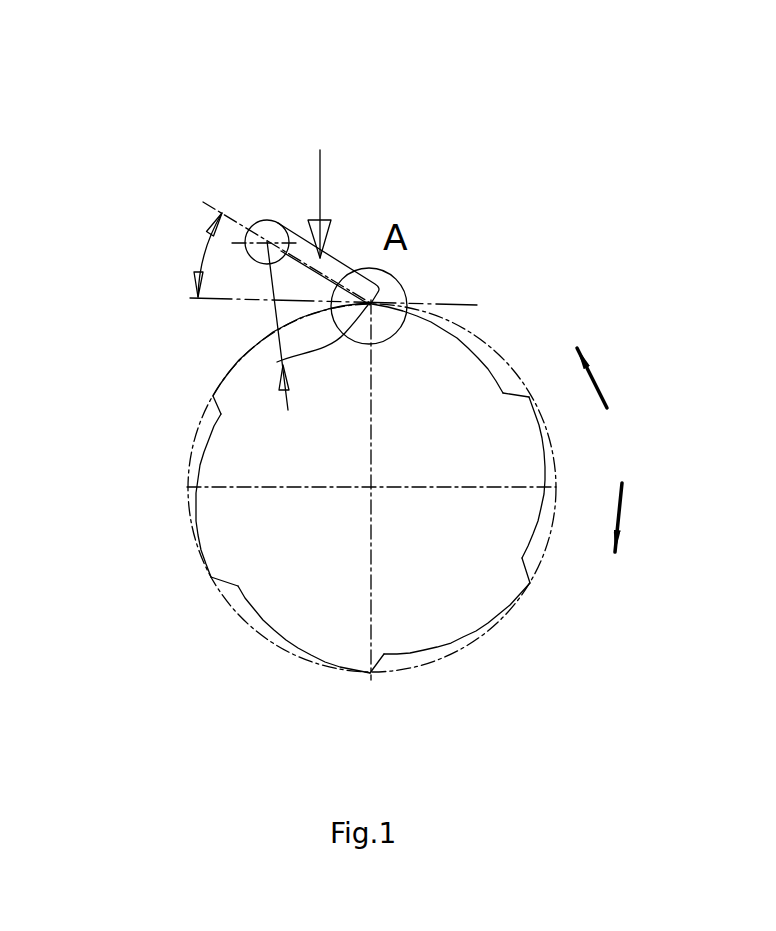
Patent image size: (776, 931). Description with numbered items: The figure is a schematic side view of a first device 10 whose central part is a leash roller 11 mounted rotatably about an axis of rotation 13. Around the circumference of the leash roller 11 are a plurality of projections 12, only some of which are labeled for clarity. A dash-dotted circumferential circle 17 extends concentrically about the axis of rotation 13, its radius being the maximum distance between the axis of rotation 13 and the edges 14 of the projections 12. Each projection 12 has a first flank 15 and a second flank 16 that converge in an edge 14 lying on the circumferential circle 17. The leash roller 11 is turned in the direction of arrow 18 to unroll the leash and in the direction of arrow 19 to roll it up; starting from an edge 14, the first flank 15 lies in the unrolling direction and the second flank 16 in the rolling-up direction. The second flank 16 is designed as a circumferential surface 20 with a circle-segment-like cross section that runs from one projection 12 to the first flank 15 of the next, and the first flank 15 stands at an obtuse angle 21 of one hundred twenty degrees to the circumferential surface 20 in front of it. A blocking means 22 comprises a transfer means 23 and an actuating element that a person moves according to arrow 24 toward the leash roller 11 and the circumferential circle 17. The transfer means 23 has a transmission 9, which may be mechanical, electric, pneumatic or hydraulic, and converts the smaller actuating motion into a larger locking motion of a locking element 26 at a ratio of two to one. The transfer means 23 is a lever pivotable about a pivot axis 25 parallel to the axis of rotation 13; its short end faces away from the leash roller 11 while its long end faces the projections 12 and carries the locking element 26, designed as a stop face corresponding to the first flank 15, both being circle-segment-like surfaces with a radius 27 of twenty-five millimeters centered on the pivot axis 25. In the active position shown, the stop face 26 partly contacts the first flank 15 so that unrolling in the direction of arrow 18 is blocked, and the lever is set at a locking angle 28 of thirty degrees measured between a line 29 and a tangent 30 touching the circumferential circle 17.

The transmission 9 is at (257, 213).
The device 10 is at (530, 145).
The leash roller 11 is at (470, 522).
The projections 12 is at (355, 680).
The axis of rotation 13 is at (374, 490).
The edge 14 is at (530, 582).
The first flank 15 is at (522, 392).
The second flank 16 is at (550, 447).
The circumferential circle 17 is at (187, 507).
The arrow 18 is at (605, 383).
The arrow 19 is at (623, 508).
The circumferential surface 20 is at (203, 463).
The obtuse angle 21 is at (215, 415).
The blocking means 22 is at (242, 172).
The transfer means 23 is at (250, 218).
The arrow 24 is at (327, 202).
The pivot axis 25 is at (267, 241).
The locking element 26 is at (385, 292).
The radius 27 is at (322, 350).
The locking angle 28 is at (205, 253).
The line 29 is at (200, 201).
The tangent 30 is at (260, 300).